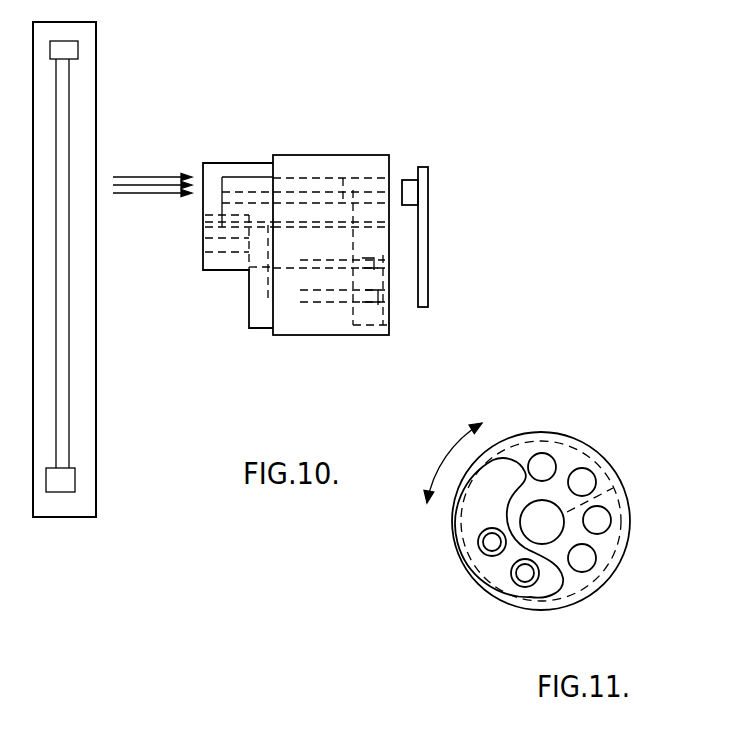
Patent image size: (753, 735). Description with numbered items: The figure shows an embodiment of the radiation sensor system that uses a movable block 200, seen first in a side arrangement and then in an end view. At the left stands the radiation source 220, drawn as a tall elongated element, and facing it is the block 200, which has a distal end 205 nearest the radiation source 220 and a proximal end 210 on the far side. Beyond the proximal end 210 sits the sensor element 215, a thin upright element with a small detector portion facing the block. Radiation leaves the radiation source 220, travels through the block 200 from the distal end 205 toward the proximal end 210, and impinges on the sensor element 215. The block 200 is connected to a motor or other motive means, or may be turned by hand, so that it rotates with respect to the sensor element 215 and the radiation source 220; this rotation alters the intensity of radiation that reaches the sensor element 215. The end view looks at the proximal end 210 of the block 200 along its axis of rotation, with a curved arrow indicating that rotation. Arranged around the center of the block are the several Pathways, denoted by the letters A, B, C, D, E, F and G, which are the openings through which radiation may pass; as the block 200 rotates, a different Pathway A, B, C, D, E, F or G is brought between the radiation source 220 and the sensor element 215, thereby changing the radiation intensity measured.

In FIG. 10, the radiation source 220 is at (97, 68).
In FIG. 10, the distal end 205 is at (203, 268).
In FIG. 10, the proximal end 210 is at (389, 330).
In FIG. 11, the proximal end 210 is at (619, 550).
In FIG. 10, the sensor element 215 is at (405, 180).
In FIG. 11, the block 200 is at (478, 598).
In FIG. 11, the Pathway A is at (600, 521).
In FIG. 11, the Pathway B is at (585, 565).
In FIG. 11, the Pathway C is at (545, 457).
In FIG. 11, the Pathway D is at (582, 473).
In FIG. 11, the Pathway E is at (504, 466).
In FIG. 11, the Pathway F is at (480, 553).
In FIG. 11, the Pathway G is at (519, 590).